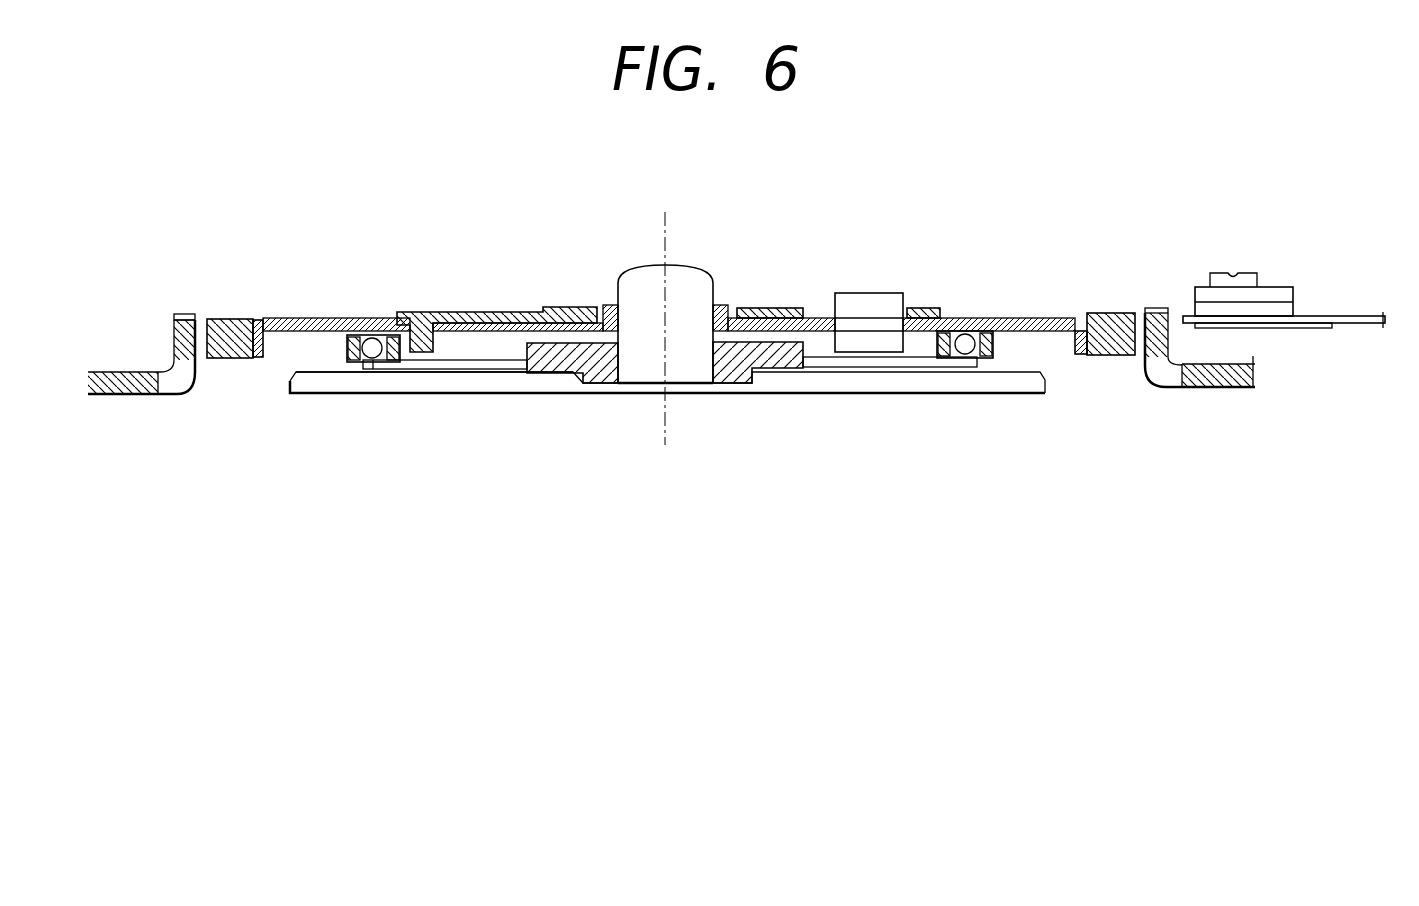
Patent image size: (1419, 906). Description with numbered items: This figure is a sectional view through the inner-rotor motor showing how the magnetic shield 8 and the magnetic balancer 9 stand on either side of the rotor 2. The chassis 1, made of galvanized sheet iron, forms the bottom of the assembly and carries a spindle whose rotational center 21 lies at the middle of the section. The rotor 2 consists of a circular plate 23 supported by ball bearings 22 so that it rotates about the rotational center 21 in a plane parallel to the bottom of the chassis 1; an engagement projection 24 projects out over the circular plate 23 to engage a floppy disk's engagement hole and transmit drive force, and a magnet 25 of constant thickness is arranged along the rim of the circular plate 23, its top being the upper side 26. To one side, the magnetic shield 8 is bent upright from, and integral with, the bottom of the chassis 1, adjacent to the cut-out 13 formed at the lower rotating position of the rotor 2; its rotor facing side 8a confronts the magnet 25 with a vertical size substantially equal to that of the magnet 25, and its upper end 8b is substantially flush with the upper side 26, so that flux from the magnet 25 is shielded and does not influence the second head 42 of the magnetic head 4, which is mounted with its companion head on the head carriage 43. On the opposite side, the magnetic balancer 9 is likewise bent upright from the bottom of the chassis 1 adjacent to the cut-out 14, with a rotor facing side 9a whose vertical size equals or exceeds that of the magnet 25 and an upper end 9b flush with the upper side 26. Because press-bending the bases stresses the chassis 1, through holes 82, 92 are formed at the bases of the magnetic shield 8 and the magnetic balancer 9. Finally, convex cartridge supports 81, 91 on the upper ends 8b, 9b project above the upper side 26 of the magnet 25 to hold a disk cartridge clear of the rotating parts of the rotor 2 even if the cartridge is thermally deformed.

The chassis 1 is at (128, 396).
The rotor 2 is at (507, 280).
The magnetic head 4 is at (1284, 255).
The magnetic shield 8 is at (1163, 388).
The rotor facing side 8a is at (1146, 378).
The upper end 8b is at (1160, 308).
The cartridge support 81 is at (1153, 313).
The through hole 82 is at (1177, 389).
The magnetic balancer 9 is at (186, 382).
The rotor facing side 9a is at (197, 347).
The upper end 9b is at (177, 316).
The cartridge support 91 is at (192, 316).
The through hole 92 is at (165, 396).
The cut-out 13 is at (1047, 385).
The cut-out 14 is at (293, 394).
The rotational center 21 is at (665, 263).
The ball bearing 22 is at (375, 362).
The circular plate 23 is at (315, 318).
The engagement projection 24 is at (876, 300).
The magnet 25 is at (238, 322).
The upper side 26 is at (228, 318).
The second head 42 is at (1225, 272).
The head carriage 43 is at (1352, 316).